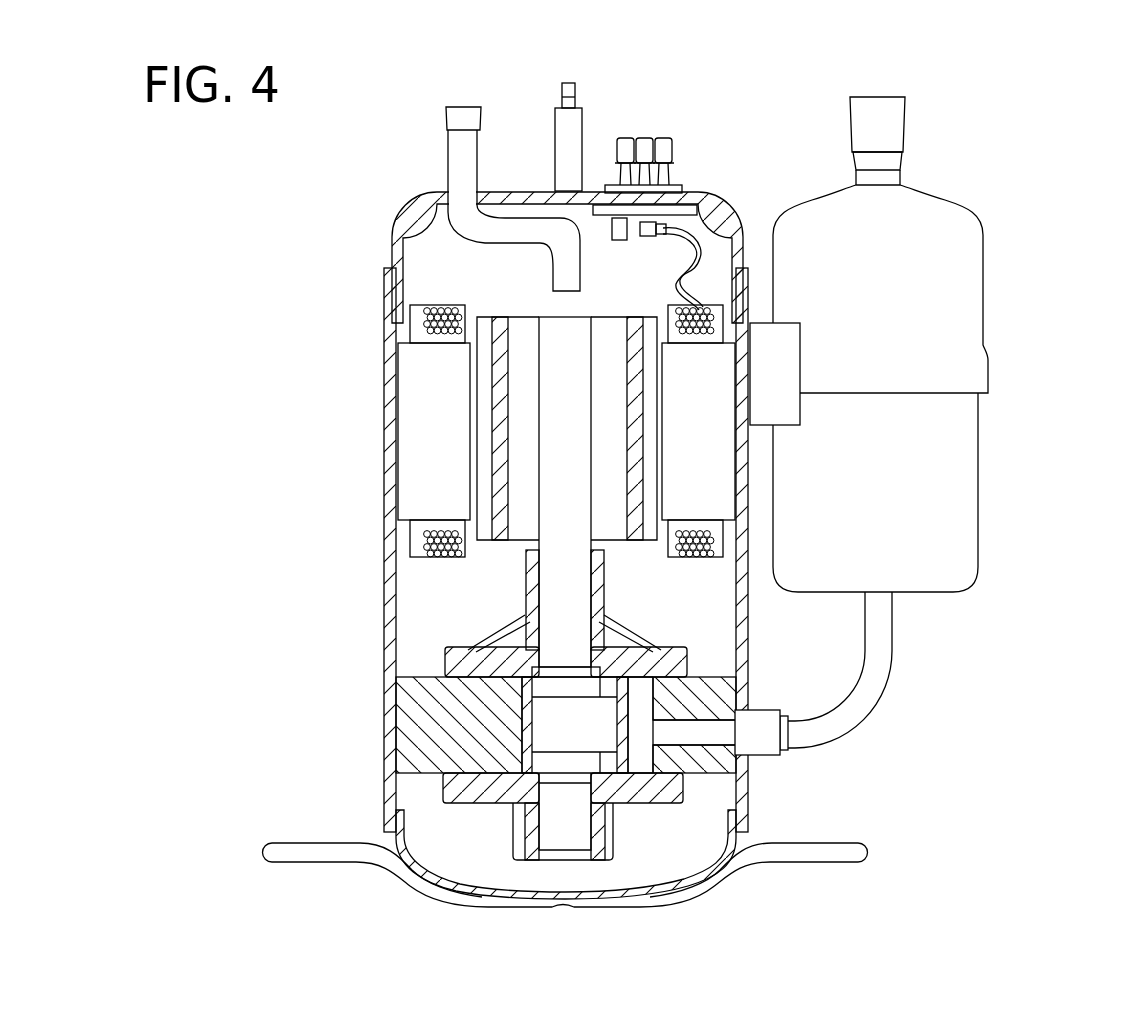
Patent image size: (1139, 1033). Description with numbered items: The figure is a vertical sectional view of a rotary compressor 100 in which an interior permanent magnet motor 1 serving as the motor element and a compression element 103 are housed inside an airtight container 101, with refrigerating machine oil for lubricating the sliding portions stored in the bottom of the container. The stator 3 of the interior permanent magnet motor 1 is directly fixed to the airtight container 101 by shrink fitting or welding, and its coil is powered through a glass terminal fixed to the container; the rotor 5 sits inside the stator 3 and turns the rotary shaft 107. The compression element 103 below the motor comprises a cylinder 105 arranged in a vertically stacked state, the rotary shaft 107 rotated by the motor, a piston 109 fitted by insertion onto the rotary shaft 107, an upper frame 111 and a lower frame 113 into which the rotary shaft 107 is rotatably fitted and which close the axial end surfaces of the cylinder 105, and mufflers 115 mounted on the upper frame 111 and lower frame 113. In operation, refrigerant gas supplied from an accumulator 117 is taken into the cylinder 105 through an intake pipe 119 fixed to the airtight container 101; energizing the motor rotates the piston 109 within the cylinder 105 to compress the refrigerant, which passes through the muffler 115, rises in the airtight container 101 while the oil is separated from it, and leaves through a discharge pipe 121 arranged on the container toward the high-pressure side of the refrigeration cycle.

The rotary compressor 100 is at (110, 175).
The airtight container 101 is at (400, 202).
The interior permanent magnet motor 1 is at (503, 401).
The stator 3 is at (386, 372).
The rotor 5 is at (486, 466).
The compression element 103 is at (499, 611).
The cylinder 105 is at (420, 678).
The rotary shaft 107 is at (557, 600).
The piston 109 is at (522, 718).
The upper frame 111 is at (633, 662).
The lower frame 113 is at (668, 792).
The muffler 115 is at (512, 628).
The accumulator 117 is at (983, 317).
The intake pipe 119 is at (888, 683).
The discharge pipe 121 is at (447, 170).